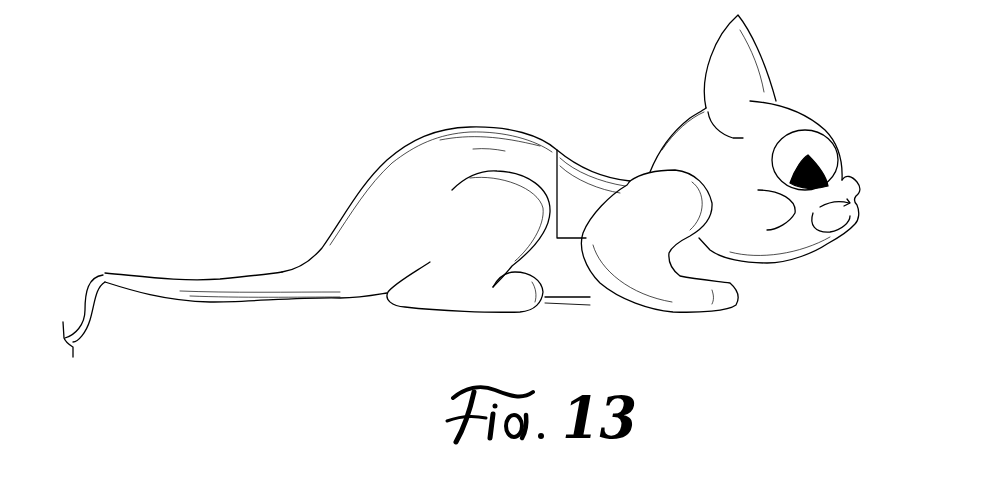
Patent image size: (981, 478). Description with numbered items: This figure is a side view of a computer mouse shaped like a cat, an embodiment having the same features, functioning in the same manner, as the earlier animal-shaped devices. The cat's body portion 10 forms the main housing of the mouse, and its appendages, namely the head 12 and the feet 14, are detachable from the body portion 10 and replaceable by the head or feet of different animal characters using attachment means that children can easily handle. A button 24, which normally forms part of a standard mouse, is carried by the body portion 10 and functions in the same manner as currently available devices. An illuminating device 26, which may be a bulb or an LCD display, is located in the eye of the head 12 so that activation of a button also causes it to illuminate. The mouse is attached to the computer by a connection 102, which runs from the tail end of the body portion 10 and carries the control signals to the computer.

The body portion 10 is at (381, 217).
The connection 102 is at (87, 322).
The right button 24 is at (592, 207).
The feet 14 is at (470, 282).
The head 12 is at (782, 240).
The illuminating device 26 is at (813, 158).